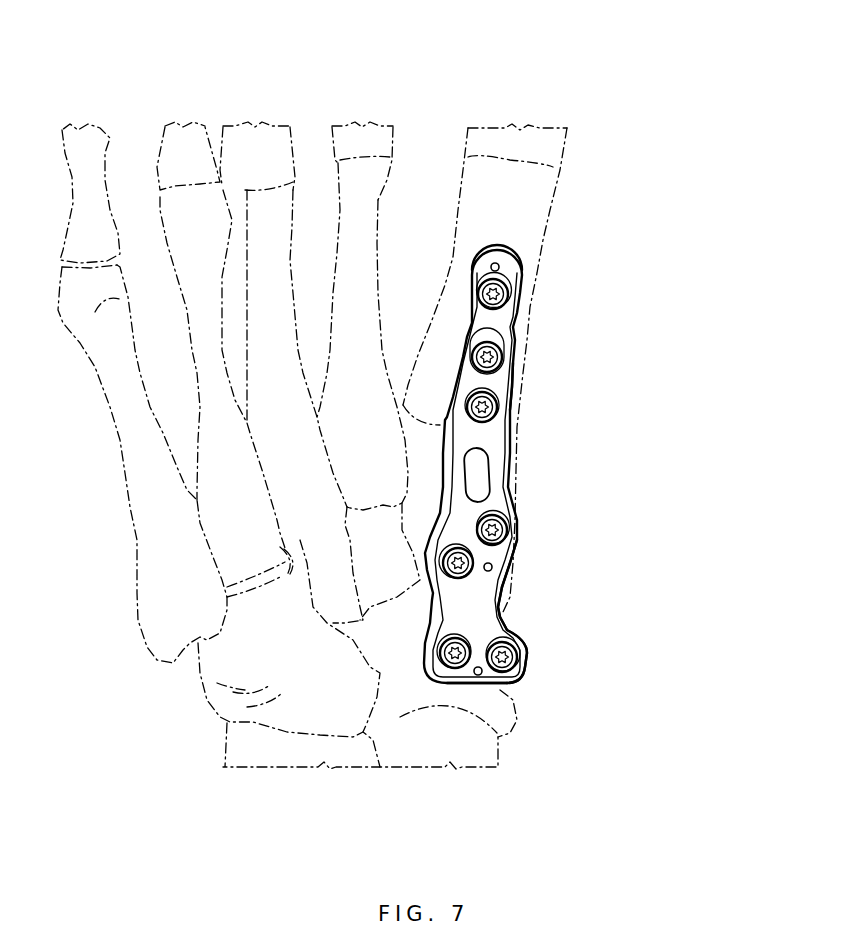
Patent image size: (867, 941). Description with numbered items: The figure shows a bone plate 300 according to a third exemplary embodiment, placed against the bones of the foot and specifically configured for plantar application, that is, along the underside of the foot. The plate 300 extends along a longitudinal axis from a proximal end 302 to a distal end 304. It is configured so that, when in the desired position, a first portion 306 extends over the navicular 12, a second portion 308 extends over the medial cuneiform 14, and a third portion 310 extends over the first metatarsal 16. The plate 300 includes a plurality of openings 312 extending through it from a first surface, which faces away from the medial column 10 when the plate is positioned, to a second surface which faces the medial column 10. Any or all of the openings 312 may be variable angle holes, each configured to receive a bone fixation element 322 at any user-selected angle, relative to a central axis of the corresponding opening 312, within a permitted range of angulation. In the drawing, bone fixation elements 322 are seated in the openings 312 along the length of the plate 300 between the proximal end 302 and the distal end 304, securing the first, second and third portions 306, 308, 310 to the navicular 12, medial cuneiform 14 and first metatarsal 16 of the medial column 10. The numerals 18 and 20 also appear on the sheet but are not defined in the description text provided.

The bone plate 300 is at (430, 413).
The proximal end 302 is at (462, 680).
The distal end 304 is at (478, 272).
The first portion 306 is at (520, 650).
The second portion 308 is at (515, 528).
The third portion 310 is at (513, 362).
The openings 312 is at (441, 561).
The bone fixation element 322 is at (468, 275).
The medial column 10 is at (537, 402).
The navicular 12 is at (515, 697).
The medial cuneiform 14 is at (515, 566).
The first metatarsal 16 is at (540, 250).
The tuberosity 18 is at (515, 605).
The bone surface 20 is at (513, 420).